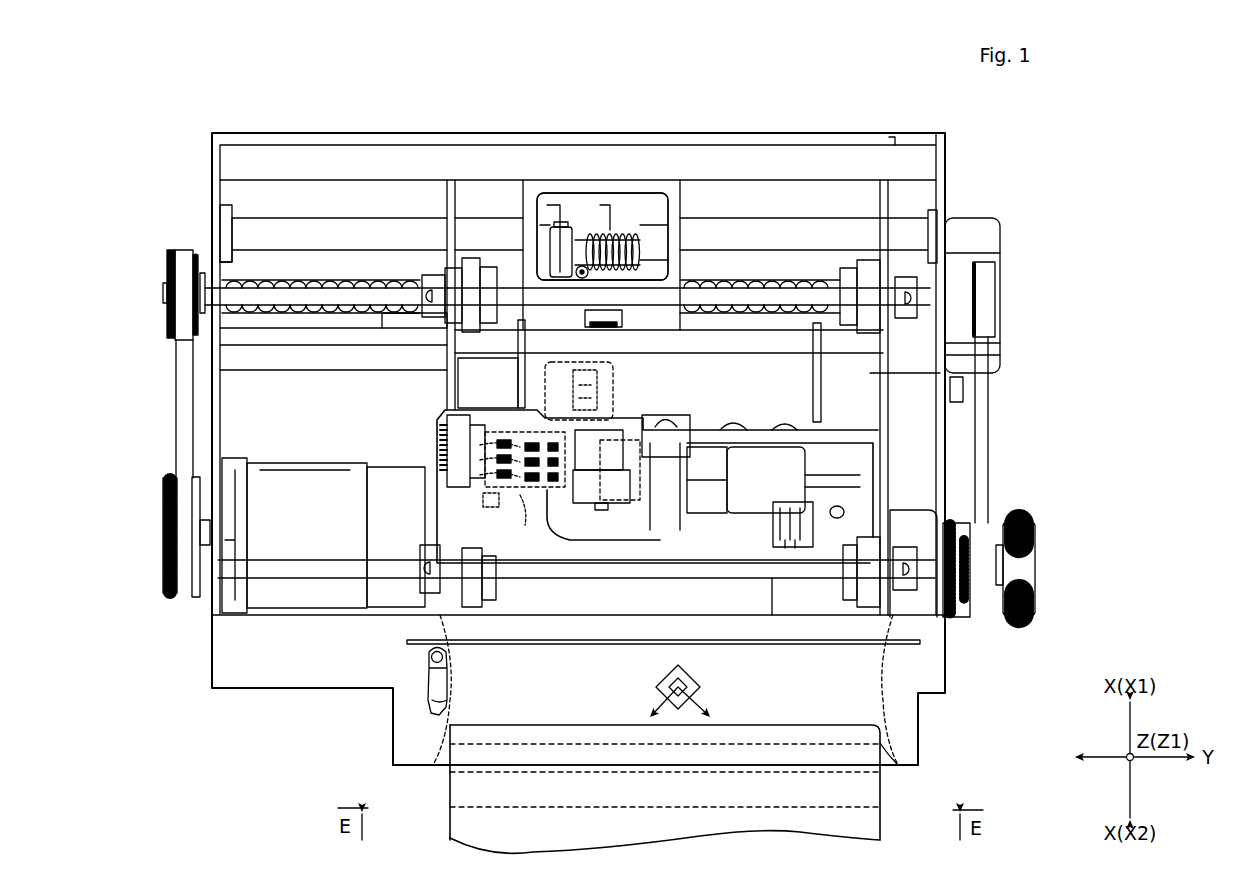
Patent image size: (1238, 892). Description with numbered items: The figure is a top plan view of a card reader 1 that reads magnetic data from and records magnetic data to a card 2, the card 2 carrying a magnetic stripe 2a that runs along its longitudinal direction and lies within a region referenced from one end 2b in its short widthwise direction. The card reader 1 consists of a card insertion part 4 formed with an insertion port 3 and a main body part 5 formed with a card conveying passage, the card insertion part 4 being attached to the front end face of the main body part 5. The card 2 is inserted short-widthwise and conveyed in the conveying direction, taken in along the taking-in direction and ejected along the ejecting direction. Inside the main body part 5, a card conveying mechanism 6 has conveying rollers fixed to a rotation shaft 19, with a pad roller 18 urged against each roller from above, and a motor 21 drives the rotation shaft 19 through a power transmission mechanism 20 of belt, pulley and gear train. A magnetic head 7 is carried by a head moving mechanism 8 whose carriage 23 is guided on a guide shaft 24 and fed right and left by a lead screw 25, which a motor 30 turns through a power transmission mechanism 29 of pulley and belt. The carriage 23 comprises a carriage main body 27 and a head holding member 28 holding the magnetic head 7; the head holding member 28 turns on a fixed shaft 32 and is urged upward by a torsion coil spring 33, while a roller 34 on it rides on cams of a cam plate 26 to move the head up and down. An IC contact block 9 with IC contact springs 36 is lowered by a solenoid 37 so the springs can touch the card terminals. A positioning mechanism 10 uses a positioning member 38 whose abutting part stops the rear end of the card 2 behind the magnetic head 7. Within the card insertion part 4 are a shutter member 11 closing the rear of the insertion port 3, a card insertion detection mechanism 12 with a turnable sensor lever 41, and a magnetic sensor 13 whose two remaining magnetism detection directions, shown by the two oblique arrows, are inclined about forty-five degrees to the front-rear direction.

The card reader 1 is at (1115, 150).
The card 2 is at (449, 822).
The magnetic stripe 2a is at (528, 807).
The one end 2b is at (555, 724).
The insertion port 3 is at (888, 766).
The card insertion part 4 is at (950, 665).
The main body part 5 is at (1018, 203).
The card conveying mechanism 6 is at (1050, 421).
The magnetic head 7 is at (625, 400).
The head moving mechanism 8 is at (414, 190).
The IC contact block 9 is at (490, 510).
The positioning mechanism 10 is at (468, 393).
The shutter member 11 is at (805, 645).
The card insertion detection mechanism 12 is at (403, 728).
The magnetic sensor 13 is at (685, 676).
The pad roller 18 is at (470, 258).
The rotation shaft 19 is at (319, 345).
The power transmission mechanism 20 is at (1020, 490).
The motor 21 is at (916, 510).
The carriage 23 is at (683, 200).
The guide shaft 24 is at (268, 218).
The lead screw 25 is at (340, 280).
The cam plate 26 is at (277, 345).
The carriage main body 27 is at (602, 236).
The head holding member 28 is at (668, 273).
The power transmission mechanism 29 is at (158, 407).
The motor 30 is at (263, 612).
The fixed shaft 32 is at (562, 225).
The torsion coil spring 33 is at (620, 235).
The roller 34 is at (620, 327).
The IC contact springs 36 is at (437, 449).
The solenoid 37 is at (760, 447).
The positioning member 38 is at (518, 377).
The sensor lever 41 is at (455, 703).